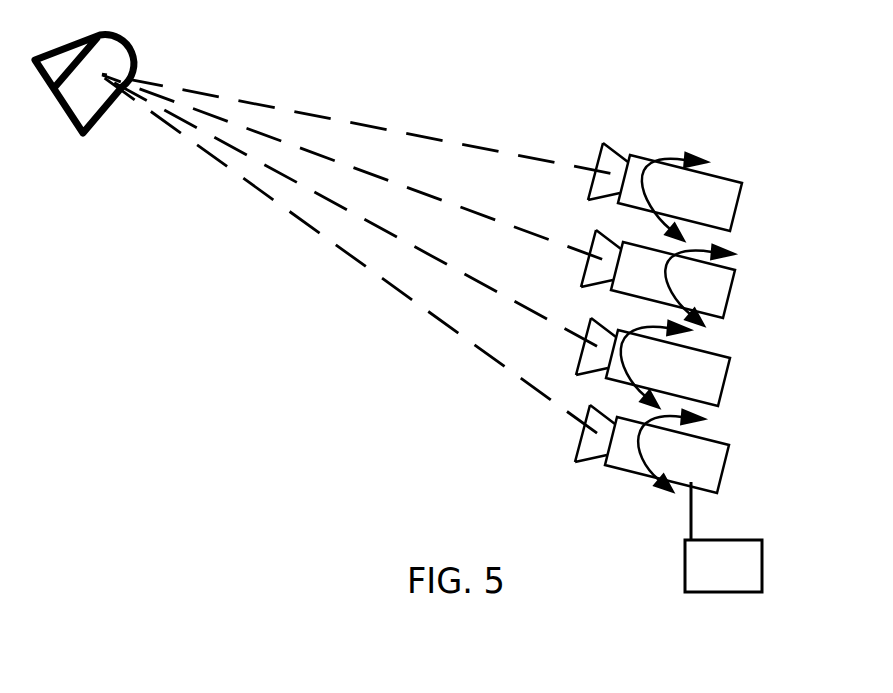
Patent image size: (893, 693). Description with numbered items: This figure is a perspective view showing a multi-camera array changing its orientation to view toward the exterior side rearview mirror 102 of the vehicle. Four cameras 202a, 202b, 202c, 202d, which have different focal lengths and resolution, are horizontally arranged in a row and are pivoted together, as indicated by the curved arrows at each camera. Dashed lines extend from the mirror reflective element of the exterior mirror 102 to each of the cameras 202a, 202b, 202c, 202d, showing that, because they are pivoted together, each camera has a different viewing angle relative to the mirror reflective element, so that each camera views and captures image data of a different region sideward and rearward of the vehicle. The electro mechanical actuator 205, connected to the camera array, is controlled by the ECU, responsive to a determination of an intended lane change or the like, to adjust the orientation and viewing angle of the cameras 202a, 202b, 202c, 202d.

The side rearview mirror 102 is at (108, 57).
The camera 202a is at (715, 200).
The camera 202b is at (715, 285).
The camera 202c is at (713, 387).
The camera 202d is at (700, 473).
The electro mechanical actuator 205 is at (723, 537).